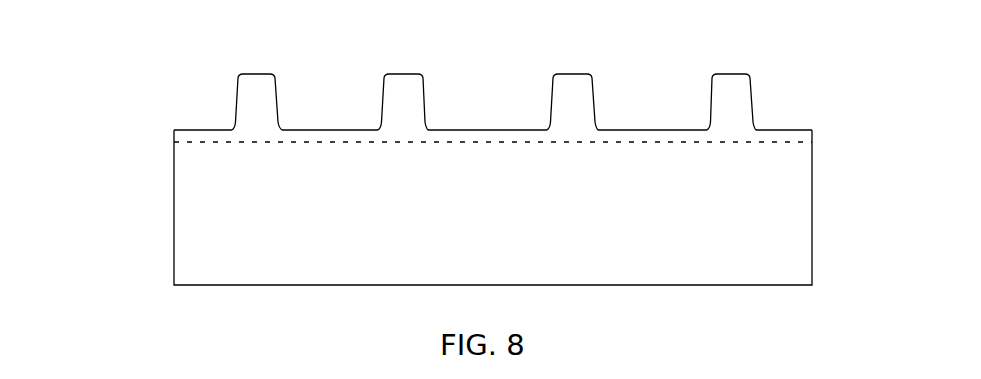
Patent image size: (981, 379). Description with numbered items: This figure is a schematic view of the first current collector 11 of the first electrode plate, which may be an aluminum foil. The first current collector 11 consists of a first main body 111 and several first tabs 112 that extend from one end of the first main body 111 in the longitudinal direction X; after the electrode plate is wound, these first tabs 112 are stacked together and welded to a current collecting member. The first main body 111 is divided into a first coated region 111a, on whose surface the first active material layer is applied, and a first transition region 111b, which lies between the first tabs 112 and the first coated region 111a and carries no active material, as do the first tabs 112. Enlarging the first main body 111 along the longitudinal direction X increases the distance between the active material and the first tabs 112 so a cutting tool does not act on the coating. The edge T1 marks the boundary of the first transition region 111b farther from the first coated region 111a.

The first current collector 11 is at (113, 99).
The first main body 111 is at (881, 112).
The first coated region 111a is at (797, 183).
The first transition region 111b is at (797, 137).
The first tab 112 is at (277, 90).
The edge of the first transition region T1 is at (192, 129).
The longitudinal direction X is at (109, 145).